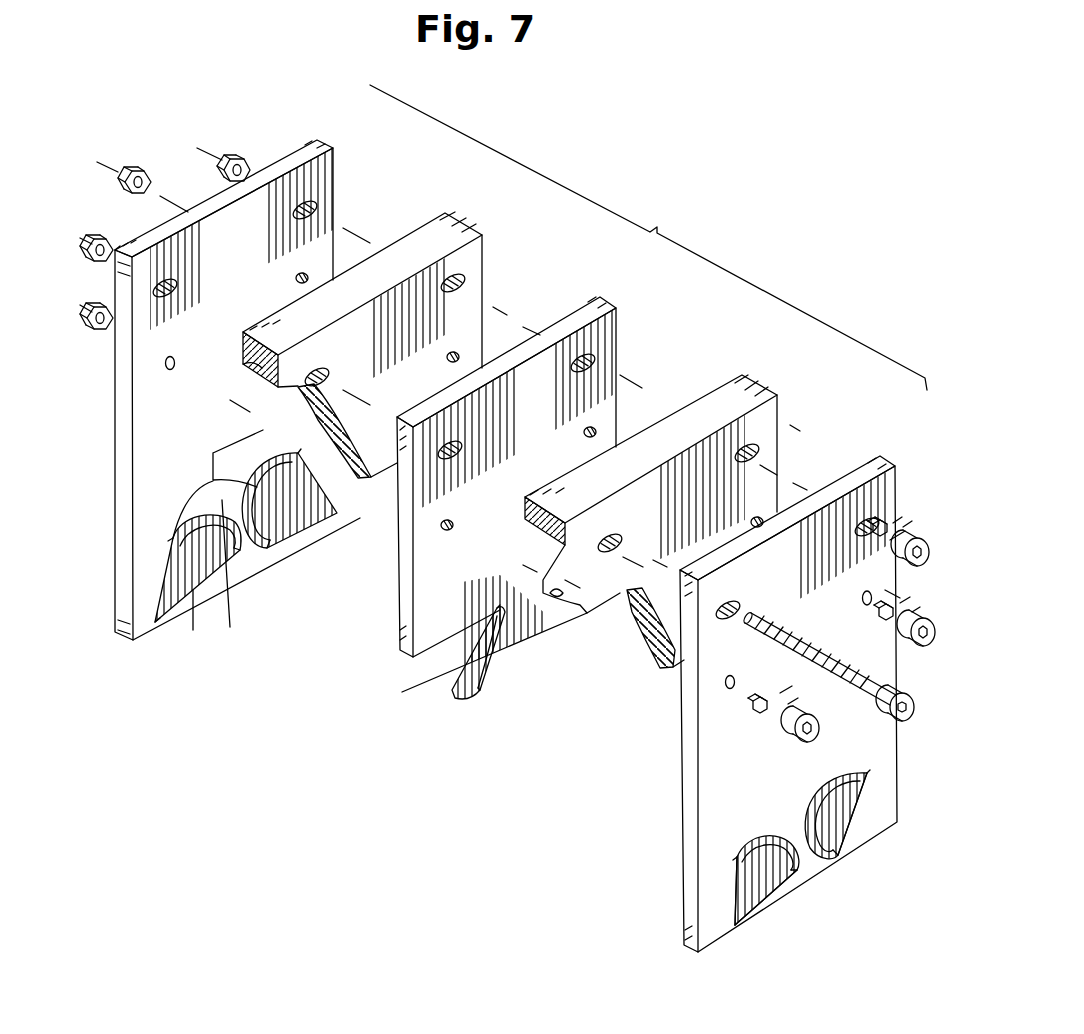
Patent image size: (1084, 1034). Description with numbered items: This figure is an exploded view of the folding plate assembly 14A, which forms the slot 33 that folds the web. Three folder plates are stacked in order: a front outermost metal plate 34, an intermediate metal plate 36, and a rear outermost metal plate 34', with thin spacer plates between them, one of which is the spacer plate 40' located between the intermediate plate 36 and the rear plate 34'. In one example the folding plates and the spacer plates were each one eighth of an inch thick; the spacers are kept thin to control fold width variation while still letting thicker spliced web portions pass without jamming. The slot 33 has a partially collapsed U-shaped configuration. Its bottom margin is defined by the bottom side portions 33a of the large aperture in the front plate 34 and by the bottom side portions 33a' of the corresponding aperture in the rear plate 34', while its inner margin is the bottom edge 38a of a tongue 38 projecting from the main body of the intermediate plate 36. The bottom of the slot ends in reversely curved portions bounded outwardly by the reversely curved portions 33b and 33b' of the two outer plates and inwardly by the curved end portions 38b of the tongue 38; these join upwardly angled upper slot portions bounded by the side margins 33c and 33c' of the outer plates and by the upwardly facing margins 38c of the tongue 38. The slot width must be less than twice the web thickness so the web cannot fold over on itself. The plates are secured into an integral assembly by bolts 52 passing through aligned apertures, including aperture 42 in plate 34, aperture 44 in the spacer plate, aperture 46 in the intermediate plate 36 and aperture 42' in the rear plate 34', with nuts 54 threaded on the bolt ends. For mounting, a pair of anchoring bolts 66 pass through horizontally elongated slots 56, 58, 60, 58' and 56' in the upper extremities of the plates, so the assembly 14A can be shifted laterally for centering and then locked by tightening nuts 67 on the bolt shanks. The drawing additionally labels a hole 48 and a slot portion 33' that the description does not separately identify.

The folding plate assembly 14A is at (305, 125).
The rear outermost metal plate 34' is at (218, 390).
The front outermost metal plate 34 is at (746, 704).
The intermediate metal plate 36 is at (392, 610).
The spacer plate 40' is at (279, 345).
The aperture 42' is at (125, 378).
The aperture 42 is at (783, 634).
The aperture 44 is at (760, 518).
The aperture 46 is at (596, 430).
The hole 48 is at (460, 352).
The bolt 52 is at (914, 652).
The nut 54 is at (141, 168).
The horizontally elongated slot 56 is at (797, 527).
The horizontally elongated slot 56' is at (273, 229).
The horizontally elongated slot 58 is at (730, 409).
The horizontally elongated slot 58' is at (418, 311).
The horizontally elongated slot 60 is at (590, 360).
The anchoring bolt 66 is at (916, 537).
The nut 67 is at (222, 172).
The slot 33 is at (741, 849).
The bottom side portion 33a is at (759, 922).
The reversely curved portion 33b is at (754, 853).
The side margin 33c is at (817, 852).
The hook 33' is at (246, 539).
The bottom side portion 33a' is at (245, 606).
The reversely curved portion 33b' is at (247, 569).
The side margin 33c' is at (290, 543).
The tongue 38 is at (543, 660).
The bottom edge 38a is at (490, 696).
The curved end portion 38b is at (470, 700).
The upwardly facing margin 38c is at (485, 655).